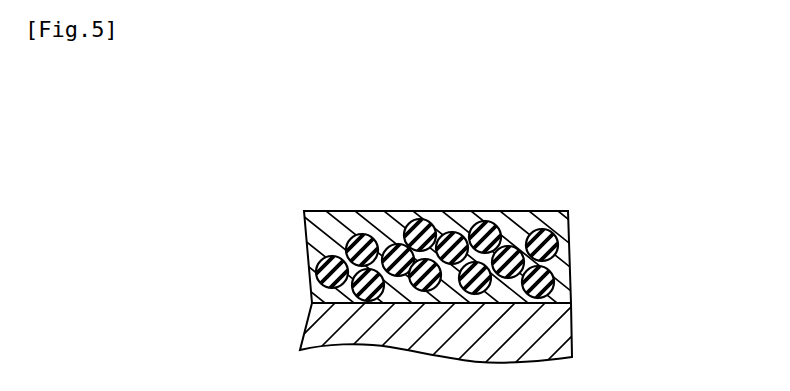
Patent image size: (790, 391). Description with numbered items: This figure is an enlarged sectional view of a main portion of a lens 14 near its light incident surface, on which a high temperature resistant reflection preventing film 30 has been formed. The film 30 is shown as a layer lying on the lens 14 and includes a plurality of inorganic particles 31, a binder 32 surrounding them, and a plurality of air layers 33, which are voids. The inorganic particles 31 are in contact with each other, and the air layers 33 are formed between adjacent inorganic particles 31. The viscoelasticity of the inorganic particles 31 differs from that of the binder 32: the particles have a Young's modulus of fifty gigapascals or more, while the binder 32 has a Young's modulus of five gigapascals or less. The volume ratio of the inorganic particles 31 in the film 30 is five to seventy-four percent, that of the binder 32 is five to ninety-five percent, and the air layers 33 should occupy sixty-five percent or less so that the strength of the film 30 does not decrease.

The lens 14 is at (666, 345).
The high temperature resistant reflection preventing film 30 is at (565, 228).
The inorganic particles 31 is at (565, 217).
The binder 32 is at (566, 260).
The air layers 33 is at (387, 235).